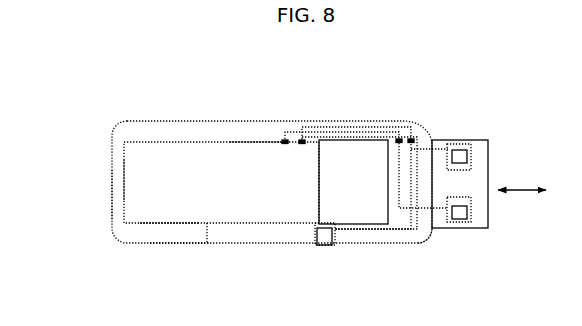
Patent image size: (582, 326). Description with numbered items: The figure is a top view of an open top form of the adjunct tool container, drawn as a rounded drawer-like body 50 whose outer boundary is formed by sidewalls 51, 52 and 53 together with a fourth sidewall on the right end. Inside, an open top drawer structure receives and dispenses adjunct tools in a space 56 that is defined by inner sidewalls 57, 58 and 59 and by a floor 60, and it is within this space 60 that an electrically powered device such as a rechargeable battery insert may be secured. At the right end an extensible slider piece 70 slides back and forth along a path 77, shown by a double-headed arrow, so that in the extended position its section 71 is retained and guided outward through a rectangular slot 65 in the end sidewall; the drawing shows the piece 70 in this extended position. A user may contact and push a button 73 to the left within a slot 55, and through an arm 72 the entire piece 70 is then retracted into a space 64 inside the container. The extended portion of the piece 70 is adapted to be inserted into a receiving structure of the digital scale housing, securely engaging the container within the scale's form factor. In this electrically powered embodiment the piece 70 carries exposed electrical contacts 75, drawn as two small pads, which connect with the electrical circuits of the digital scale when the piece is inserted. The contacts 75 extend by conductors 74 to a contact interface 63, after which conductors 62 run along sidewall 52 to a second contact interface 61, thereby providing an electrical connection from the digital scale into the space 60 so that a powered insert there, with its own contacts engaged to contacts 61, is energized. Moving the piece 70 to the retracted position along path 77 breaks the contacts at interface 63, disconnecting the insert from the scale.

The housing 50 is at (150, 113).
The sidewall 51 is at (110, 197).
The sidewall 52 is at (204, 119).
The sidewall 53 is at (178, 247).
The slot 55 is at (223, 235).
The space 56 is at (255, 202).
The sidewall 57 is at (166, 223).
The sidewall 58 is at (123, 178).
The sidewall 59 is at (256, 140).
The floor 60 is at (144, 207).
The contact interface 61 is at (300, 138).
The conductors 62 is at (344, 122).
The contact interface 63 is at (403, 131).
The space 64 is at (341, 167).
The rectangular slot 65 is at (430, 234).
The extensible slider piece 70 is at (482, 226).
The section 71 is at (406, 227).
The arm 72 is at (348, 229).
The button 73 is at (324, 250).
The conductors 74 is at (423, 207).
The electrical contacts 75 is at (465, 198).
The path 77 is at (522, 205).